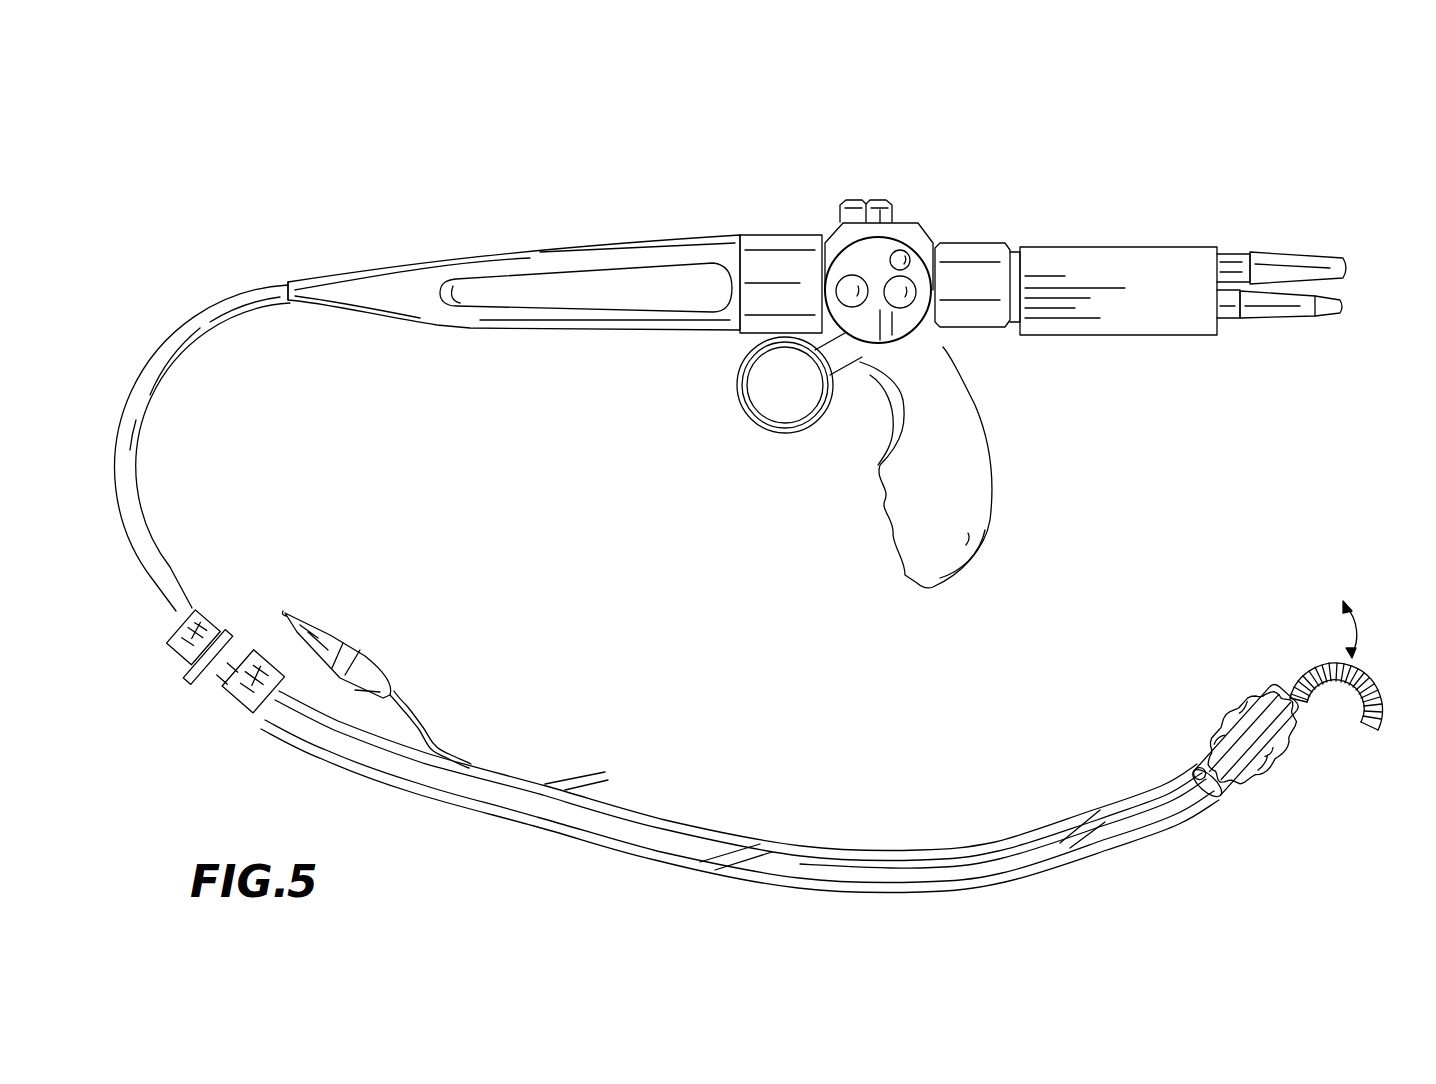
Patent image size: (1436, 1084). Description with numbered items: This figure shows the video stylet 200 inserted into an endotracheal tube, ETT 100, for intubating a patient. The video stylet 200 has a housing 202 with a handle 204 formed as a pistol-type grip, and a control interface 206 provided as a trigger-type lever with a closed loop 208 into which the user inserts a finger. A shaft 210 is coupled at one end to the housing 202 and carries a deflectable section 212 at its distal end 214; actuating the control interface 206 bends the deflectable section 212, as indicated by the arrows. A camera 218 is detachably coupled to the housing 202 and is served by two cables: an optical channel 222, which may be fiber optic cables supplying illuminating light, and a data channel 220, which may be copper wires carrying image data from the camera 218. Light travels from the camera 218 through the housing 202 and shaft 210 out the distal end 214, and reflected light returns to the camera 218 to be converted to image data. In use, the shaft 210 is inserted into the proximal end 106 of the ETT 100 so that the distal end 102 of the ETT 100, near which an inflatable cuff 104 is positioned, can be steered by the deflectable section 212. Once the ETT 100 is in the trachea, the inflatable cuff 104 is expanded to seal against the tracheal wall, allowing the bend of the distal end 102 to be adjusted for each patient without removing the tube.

The ETT 100 is at (558, 842).
The distal end 102 is at (1267, 690).
The inflatable cuff 104 is at (1225, 720).
The proximal end 106 is at (242, 720).
The video stylet 200 is at (878, 184).
The housing 202 is at (548, 282).
The handle 204 is at (990, 462).
The control interface 206 is at (714, 435).
The closed loop 208 is at (795, 432).
The shaft 210 is at (148, 512).
The deflectable section 212 is at (1317, 663).
The distal end 214 is at (1373, 670).
The camera 218 is at (1088, 250).
The data channel 220 is at (1287, 254).
The optical channel 222 is at (1290, 318).